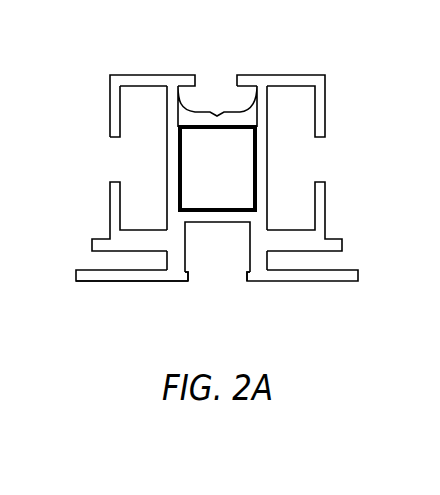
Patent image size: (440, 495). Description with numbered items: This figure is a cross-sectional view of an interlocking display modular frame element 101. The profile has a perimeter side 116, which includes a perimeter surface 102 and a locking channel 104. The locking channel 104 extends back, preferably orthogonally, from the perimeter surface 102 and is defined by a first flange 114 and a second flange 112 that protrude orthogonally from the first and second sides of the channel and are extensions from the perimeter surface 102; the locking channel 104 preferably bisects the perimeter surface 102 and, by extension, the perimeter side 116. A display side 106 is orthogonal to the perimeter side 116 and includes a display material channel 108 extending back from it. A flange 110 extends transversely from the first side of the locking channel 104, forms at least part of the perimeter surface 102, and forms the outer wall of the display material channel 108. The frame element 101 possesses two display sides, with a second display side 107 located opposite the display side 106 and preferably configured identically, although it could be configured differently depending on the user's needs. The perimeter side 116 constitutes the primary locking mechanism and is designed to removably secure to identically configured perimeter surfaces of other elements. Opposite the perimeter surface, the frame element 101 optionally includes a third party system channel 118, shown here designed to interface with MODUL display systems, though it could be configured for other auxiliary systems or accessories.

The modular frame element 101 is at (102, 58).
The perimeter surface 102 is at (133, 283).
The locking channel 104 is at (220, 277).
The display side 106 is at (102, 120).
The second display side 107 is at (340, 118).
The display material channel 108 is at (98, 260).
The flange 110 is at (76, 277).
The second flange 112 is at (240, 278).
The first flange 114 is at (188, 278).
The perimeter side 116 is at (300, 279).
The third party system channel 118 is at (217, 80).